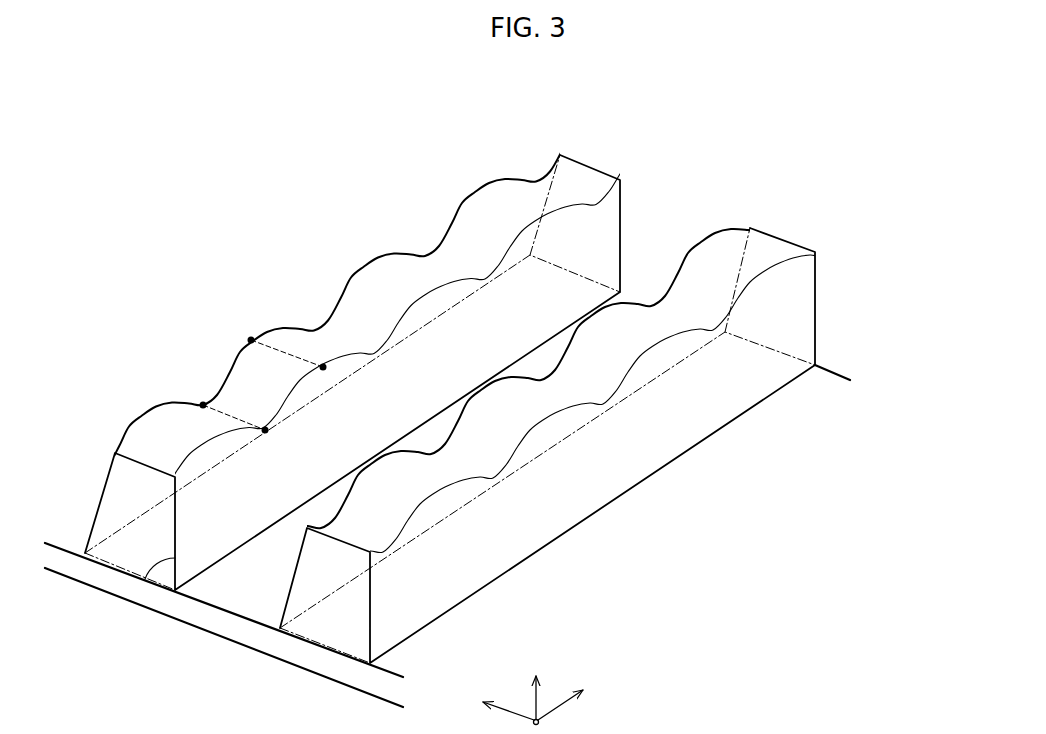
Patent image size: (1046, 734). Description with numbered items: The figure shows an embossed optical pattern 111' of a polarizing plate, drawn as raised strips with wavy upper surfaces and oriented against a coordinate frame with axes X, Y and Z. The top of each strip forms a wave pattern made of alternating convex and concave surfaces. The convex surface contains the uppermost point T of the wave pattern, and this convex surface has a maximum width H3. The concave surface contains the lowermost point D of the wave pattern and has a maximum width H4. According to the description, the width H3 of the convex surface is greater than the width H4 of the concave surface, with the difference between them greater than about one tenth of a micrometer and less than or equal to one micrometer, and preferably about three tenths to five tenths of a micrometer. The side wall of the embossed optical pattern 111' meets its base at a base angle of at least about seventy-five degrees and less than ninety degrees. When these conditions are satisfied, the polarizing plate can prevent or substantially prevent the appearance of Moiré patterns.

The embossed optical pattern 111' is at (454, 383).
The maximum width of the convex surface H3 is at (323, 367).
The maximum width of the concave surface H4 is at (265, 430).
The uppermost point of the wave pattern T is at (287, 352).
The lowermost point of the wave pattern D is at (233, 420).
The X axis X is at (499, 706).
The Y axis Y is at (568, 693).
The Z axis Z is at (537, 685).